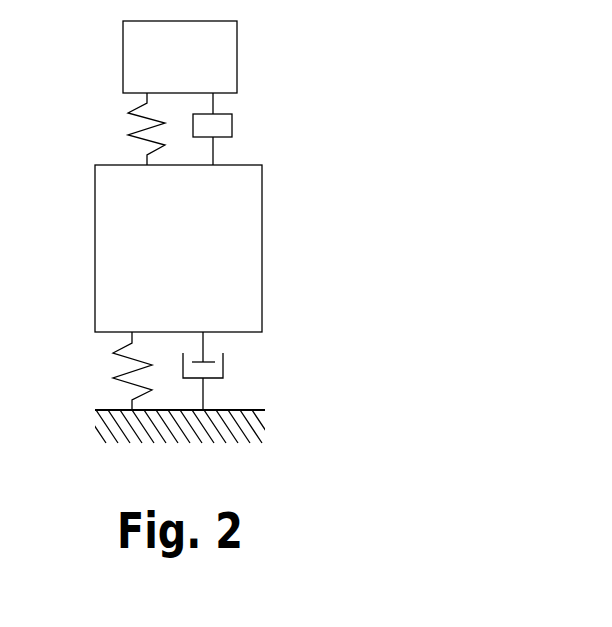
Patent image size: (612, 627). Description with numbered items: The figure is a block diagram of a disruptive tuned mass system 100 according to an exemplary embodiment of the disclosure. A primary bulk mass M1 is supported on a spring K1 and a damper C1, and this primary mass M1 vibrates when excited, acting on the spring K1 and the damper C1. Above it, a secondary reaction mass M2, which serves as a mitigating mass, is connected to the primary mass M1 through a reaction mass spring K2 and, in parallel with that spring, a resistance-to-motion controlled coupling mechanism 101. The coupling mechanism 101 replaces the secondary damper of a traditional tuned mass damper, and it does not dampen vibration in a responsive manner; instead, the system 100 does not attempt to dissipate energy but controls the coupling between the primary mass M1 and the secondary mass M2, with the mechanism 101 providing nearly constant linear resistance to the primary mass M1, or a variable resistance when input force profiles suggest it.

The system 100 is at (245, 232).
The resistance-to-motion controlled coupling mechanism 101 is at (233, 116).
The primary bulk mass M1 is at (178, 248).
The secondary reaction mass M2 is at (180, 57).
The spring K1 is at (115, 371).
The reaction mass spring rate K2 is at (125, 129).
The damper C1 is at (220, 371).